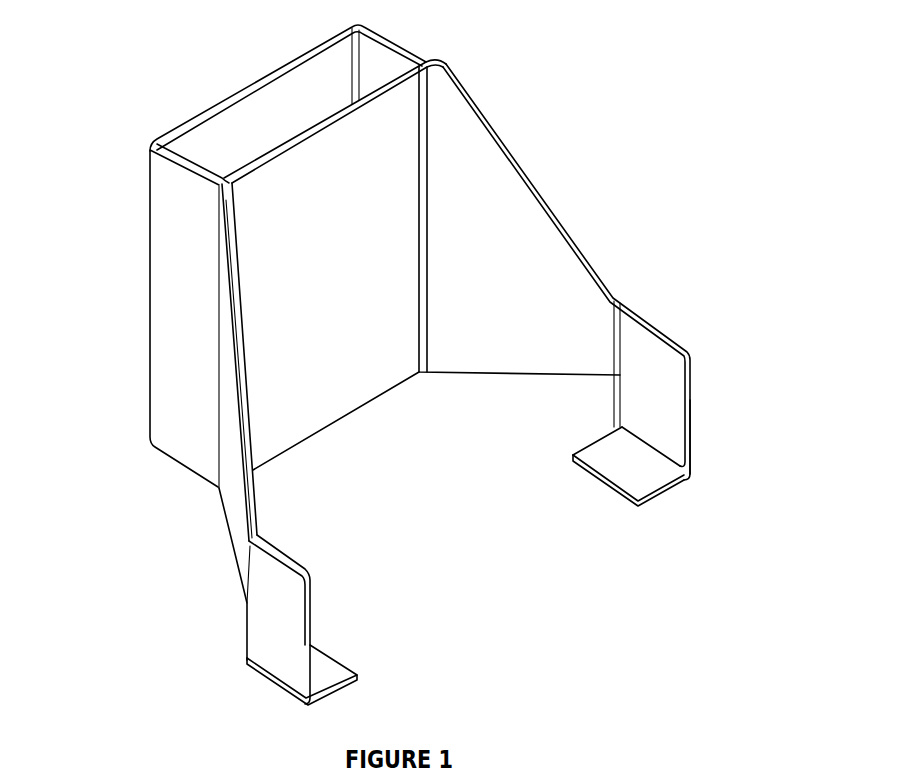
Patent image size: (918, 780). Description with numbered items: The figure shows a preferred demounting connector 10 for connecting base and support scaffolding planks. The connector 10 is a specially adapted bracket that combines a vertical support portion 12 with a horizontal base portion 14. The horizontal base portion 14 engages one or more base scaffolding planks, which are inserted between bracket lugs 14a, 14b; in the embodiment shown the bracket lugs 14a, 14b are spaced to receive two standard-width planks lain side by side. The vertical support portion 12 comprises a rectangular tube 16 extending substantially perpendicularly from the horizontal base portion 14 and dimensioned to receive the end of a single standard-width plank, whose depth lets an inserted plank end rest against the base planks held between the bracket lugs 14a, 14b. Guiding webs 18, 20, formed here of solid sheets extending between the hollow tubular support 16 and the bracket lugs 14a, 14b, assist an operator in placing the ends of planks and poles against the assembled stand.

The demounting connector 10 is at (341, 290).
The vertical support portion 12 is at (134, 326).
The horizontal base portion 14 is at (717, 381).
The bracket lug 14a is at (633, 463).
The bracket lug 14b is at (320, 677).
The rectangular tube 16 is at (232, 133).
The guiding web 18 is at (528, 268).
The guiding web 20 is at (235, 522).